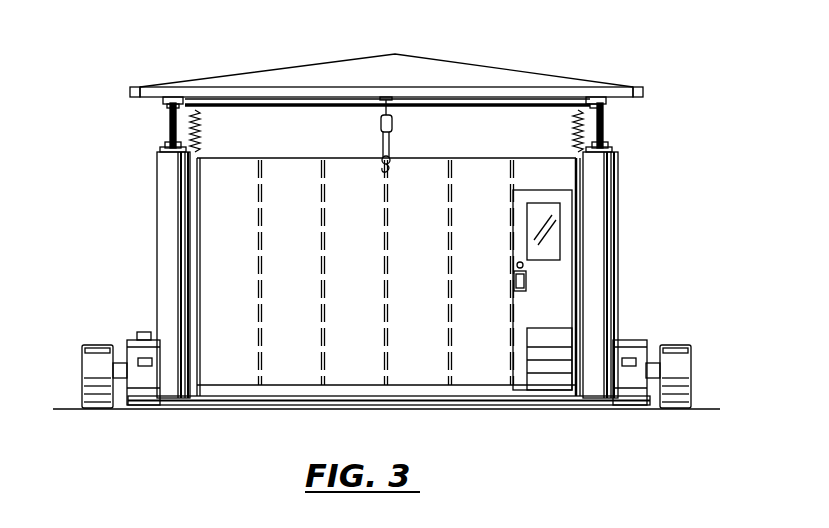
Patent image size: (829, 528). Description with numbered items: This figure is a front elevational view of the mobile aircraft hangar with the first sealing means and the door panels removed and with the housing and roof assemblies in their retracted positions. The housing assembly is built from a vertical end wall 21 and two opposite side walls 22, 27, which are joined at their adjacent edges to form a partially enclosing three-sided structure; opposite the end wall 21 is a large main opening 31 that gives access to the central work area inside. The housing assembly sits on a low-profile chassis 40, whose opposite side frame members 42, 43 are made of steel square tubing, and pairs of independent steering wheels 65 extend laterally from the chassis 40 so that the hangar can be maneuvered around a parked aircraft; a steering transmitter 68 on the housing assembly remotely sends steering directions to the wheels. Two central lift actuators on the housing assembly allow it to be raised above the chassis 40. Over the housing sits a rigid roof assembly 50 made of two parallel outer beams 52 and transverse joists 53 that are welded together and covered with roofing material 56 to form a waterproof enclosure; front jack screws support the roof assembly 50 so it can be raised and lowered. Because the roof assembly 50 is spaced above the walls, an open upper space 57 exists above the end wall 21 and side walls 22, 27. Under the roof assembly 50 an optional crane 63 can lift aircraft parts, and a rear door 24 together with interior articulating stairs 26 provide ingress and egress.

The end wall 21 is at (369, 307).
The side wall 22 is at (197, 215).
The rear door 24 is at (530, 197).
The interior articulating stairs 26 is at (545, 352).
The side wall 27 is at (583, 262).
The main opening 31 is at (245, 260).
The chassis 40 is at (473, 406).
The side frame member 42 is at (127, 342).
The side frame member 43 is at (630, 342).
The roof assembly 50 is at (386, 60).
The outer beam 52 is at (165, 103).
The joist 53 is at (316, 100).
The roofing material 56 is at (367, 72).
The upper space 57 is at (255, 143).
The crane 63 is at (392, 122).
The steering wheel 65 is at (98, 363).
The steering transmitter 68 is at (138, 333).